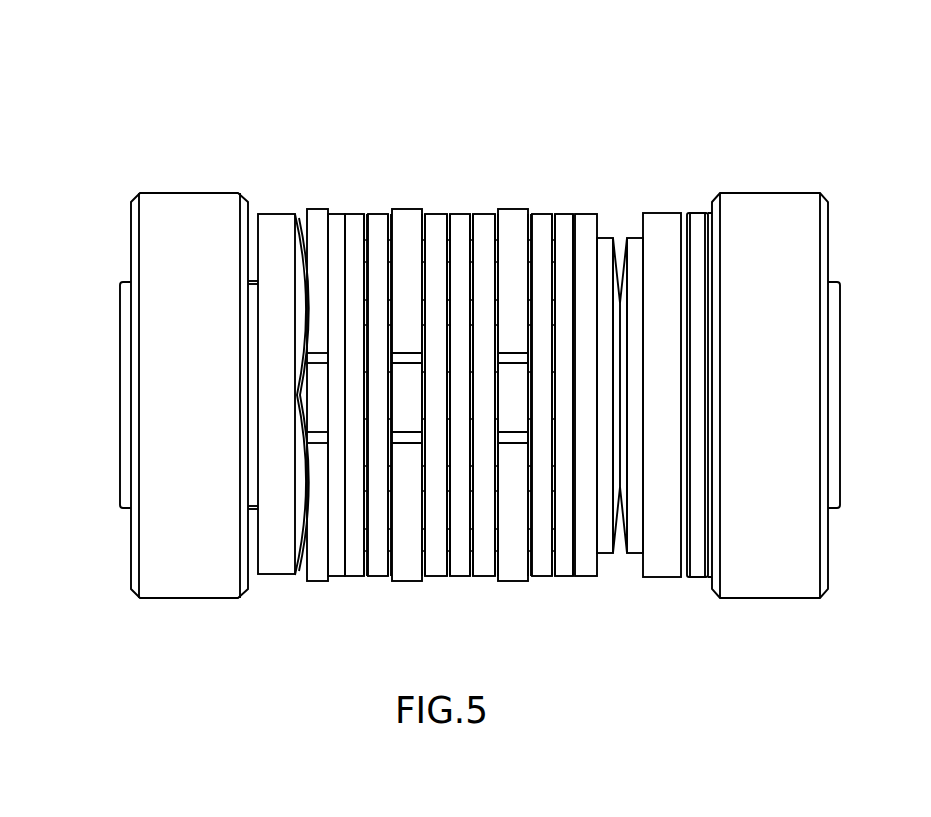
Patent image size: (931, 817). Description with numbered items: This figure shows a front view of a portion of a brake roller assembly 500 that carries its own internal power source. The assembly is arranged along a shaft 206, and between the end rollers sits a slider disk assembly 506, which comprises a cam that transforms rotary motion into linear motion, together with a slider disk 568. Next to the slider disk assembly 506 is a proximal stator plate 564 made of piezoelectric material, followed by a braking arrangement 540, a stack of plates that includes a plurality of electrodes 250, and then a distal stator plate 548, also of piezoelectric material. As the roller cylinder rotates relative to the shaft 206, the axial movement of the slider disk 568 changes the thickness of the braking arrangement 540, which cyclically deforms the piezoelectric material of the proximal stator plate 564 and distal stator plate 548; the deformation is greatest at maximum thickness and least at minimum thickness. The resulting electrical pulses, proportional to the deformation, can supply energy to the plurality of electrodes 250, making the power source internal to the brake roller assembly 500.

The brake roller assembly 500 is at (250, 42).
The shaft 206 is at (127, 392).
The slider disk assembly 506 is at (345, 197).
The slider disk 568 is at (338, 548).
The proximal stator plate 564 is at (357, 227).
The braking arrangement 540 is at (479, 160).
The plurality of electrodes 250 is at (413, 565).
The distal stator plate 548 is at (586, 218).